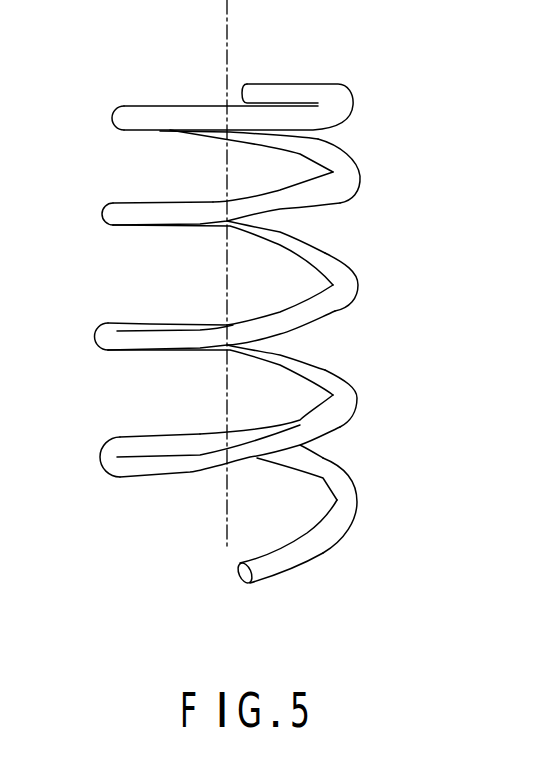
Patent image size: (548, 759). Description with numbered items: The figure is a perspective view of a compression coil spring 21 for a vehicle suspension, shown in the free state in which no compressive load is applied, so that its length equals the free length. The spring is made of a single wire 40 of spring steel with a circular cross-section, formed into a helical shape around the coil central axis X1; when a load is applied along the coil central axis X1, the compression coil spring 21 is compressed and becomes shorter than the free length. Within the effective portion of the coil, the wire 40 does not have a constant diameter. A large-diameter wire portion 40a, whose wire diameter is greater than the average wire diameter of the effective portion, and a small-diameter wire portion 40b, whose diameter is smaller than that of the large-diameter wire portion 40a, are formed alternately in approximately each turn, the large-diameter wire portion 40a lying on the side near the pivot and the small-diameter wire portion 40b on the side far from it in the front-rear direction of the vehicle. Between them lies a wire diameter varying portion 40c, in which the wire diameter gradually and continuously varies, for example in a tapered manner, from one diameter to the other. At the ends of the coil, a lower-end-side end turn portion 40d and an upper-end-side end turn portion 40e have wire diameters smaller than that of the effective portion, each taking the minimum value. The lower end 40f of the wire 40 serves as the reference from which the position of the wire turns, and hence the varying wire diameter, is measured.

The compression coil spring 21 is at (432, 122).
The wire 40 is at (231, 322).
The large-diameter wire portion 40a is at (99, 214).
The small-diameter wire portion 40b is at (361, 173).
The wire diameter varying portion 40c is at (213, 199).
The lower-end-side end turn portion 40d is at (309, 550).
The upper-end-side end turn portion 40e is at (283, 84).
The lower end 40f is at (237, 578).
The coil central axis X1 is at (224, 527).